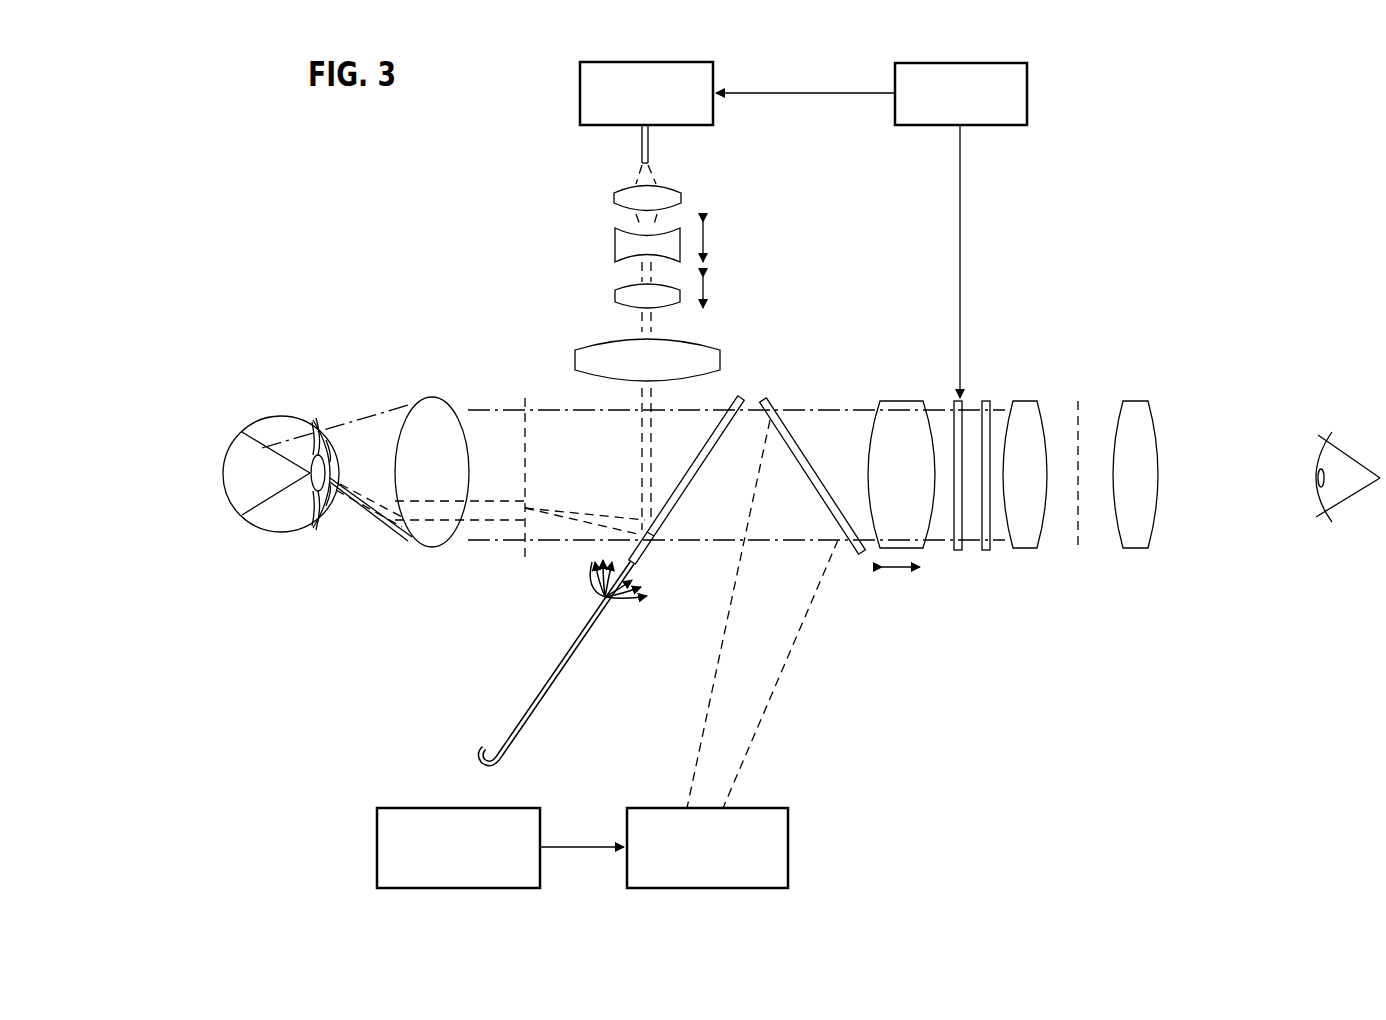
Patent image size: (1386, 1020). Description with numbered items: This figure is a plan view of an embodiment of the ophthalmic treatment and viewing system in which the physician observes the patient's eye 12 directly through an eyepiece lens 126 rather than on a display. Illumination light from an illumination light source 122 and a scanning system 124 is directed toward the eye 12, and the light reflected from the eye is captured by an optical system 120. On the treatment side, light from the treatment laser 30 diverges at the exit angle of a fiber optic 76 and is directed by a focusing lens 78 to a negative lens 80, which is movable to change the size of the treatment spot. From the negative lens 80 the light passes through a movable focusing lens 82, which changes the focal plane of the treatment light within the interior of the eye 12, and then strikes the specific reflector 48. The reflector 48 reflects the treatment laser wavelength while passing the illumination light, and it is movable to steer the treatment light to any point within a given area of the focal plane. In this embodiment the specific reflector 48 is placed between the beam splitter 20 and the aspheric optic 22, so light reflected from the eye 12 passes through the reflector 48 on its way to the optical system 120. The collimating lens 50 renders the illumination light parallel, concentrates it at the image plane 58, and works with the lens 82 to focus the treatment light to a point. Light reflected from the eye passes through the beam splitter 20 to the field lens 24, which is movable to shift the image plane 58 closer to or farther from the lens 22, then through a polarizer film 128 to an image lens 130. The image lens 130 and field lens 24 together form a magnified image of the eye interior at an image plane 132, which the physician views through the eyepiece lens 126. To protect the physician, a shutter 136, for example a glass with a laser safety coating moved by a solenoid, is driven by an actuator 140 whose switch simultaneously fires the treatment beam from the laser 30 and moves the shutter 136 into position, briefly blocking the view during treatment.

The eye 12 is at (285, 416).
The aspheric optic 22 is at (436, 400).
The image plane 58 is at (530, 396).
The treatment laser 30 is at (590, 100).
The actuator 140 is at (1028, 112).
The fiber optic 76 is at (640, 147).
The focusing lens 78 is at (620, 197).
The negative lens 80 is at (617, 243).
The focusing lens 82 is at (618, 296).
The collimating lens 50 is at (605, 346).
The specific reflector 48 is at (740, 396).
The beam splitter 20 is at (770, 399).
The field lens 24 is at (905, 404).
The shutter 136 is at (958, 552).
The polarizer film 128 is at (988, 552).
The image lens 130 is at (1035, 542).
The image plane 132 is at (1082, 406).
The eyepiece lens 126 is at (1145, 408).
The optical system 120 is at (1056, 605).
The illumination light source 122 is at (430, 808).
The scanning system 124 is at (655, 808).